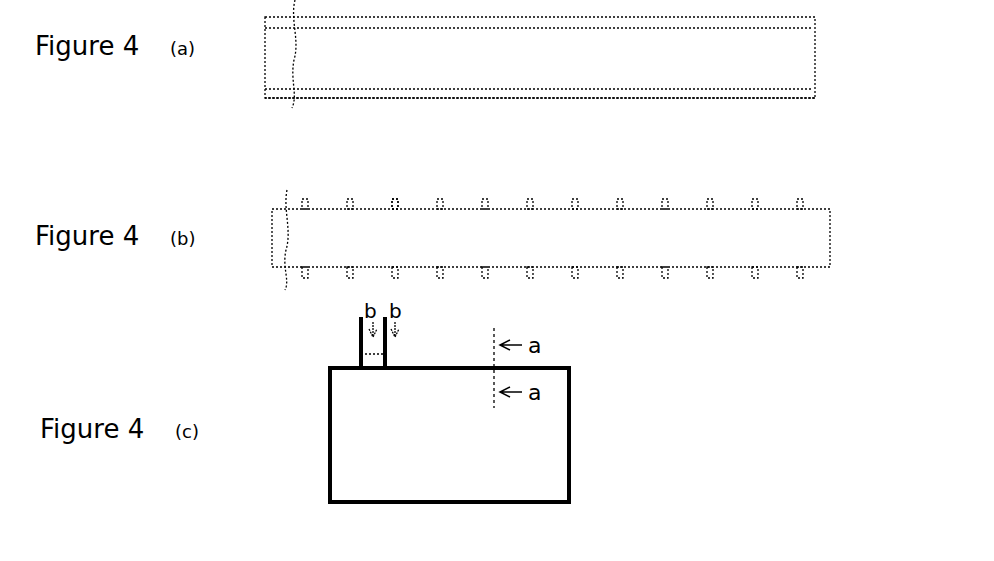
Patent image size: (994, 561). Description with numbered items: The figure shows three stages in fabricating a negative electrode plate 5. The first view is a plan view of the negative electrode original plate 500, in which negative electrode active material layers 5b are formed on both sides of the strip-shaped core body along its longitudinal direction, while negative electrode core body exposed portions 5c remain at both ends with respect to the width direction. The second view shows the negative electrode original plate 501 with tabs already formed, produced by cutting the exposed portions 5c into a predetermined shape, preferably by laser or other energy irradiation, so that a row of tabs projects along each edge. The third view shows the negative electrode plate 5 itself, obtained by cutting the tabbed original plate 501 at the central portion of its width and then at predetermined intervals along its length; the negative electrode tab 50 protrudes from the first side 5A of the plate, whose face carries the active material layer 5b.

In FIG. 4C, the negative electrode plate 5 is at (322, 455).
In FIG. 4C, the first side 5A is at (452, 366).
In FIG. 4A, the negative electrode active material layer 5b is at (803, 58).
In FIG. 4B, the negative electrode active material layer 5b is at (797, 232).
In FIG. 4C, the negative electrode active material layer 5b is at (516, 457).
In FIG. 4A, the negative electrode core body exposed portion 5c is at (808, 20).
In FIG. 4B, the negative electrode tab 50 is at (808, 200).
In FIG. 4C, the negative electrode tab 50 is at (358, 352).
In FIG. 4A, the negative electrode original plate 500 is at (504, 102).
In FIG. 4B, the negative electrode original plate with tabs already formed 501 is at (372, 204).